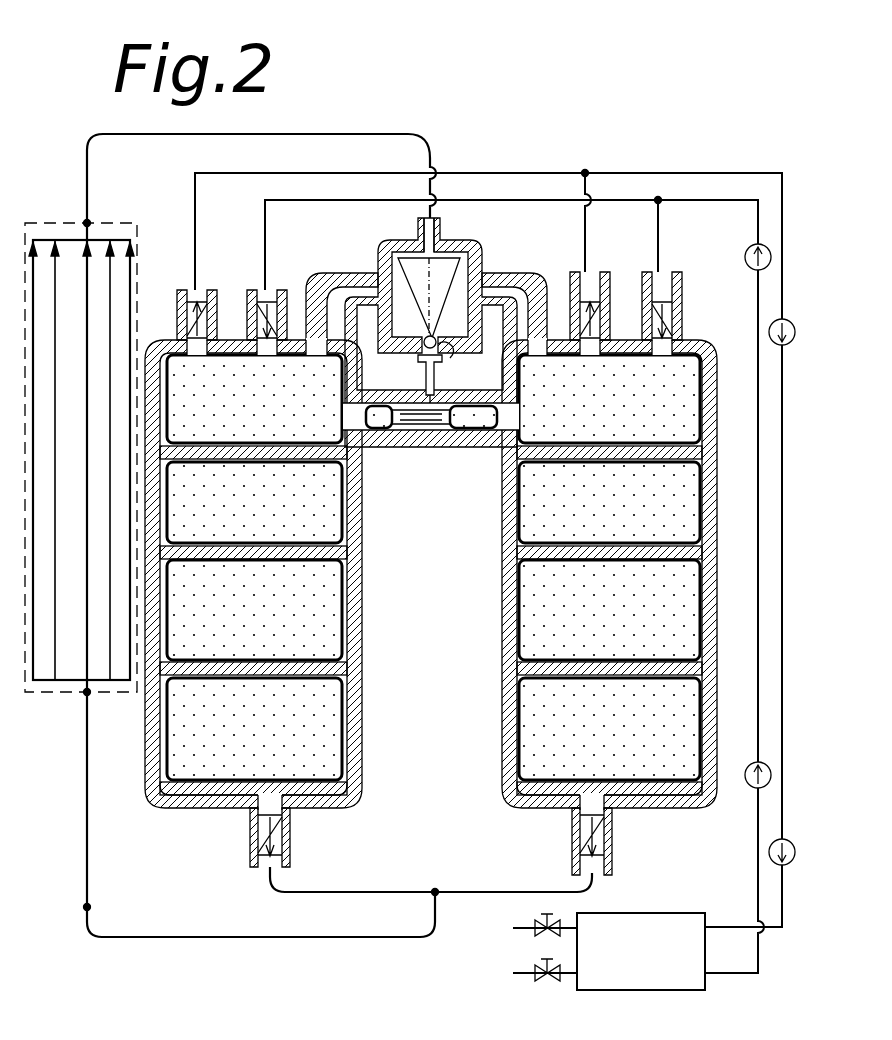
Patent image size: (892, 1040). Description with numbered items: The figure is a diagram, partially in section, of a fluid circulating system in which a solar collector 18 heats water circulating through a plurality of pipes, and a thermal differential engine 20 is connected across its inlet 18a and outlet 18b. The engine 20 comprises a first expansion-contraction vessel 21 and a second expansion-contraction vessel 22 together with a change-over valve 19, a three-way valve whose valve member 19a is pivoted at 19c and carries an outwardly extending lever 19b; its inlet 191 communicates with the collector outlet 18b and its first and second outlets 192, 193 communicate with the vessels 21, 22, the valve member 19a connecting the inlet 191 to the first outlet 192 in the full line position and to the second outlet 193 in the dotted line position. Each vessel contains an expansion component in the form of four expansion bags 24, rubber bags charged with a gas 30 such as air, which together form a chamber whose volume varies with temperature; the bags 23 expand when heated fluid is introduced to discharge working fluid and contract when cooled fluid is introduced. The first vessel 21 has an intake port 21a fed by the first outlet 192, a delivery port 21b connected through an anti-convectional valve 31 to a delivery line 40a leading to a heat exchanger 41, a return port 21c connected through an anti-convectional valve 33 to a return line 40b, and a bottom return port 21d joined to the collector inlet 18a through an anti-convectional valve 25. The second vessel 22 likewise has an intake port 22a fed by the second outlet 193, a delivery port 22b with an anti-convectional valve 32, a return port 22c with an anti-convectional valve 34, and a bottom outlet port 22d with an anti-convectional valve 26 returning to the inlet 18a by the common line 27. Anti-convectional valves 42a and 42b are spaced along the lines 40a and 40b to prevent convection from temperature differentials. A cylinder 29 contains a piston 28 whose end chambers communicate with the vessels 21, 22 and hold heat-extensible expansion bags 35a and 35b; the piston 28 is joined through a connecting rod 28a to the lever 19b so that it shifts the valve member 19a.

The solar collector 18 is at (88, 224).
The solar collector inlet 18a is at (86, 700).
The solar collector outlet 18b is at (86, 222).
The change-over valve 19 is at (486, 252).
The valve member 19a is at (386, 300).
The lever 19b is at (414, 360).
The pivot 19c is at (440, 352).
The inlet 191 is at (440, 230).
The first outlet 192 is at (356, 292).
The second outlet 193 is at (494, 290).
The thermal differential engine 20 is at (178, 256).
The first expansion-contraction vessel 21 is at (370, 572).
The intake port 21a is at (328, 360).
The delivery port 21b is at (192, 348).
The return port 21c is at (270, 348).
The return port 21d is at (270, 800).
The second expansion-contraction vessel 22 is at (494, 570).
The intake port 22a is at (533, 348).
The delivery port 22b is at (596, 348).
The return port 22c is at (660, 348).
The outlet port 22d is at (594, 800).
The adsorbent beds 23 is at (342, 692).
The expansion bags 24 is at (350, 716).
The anti-convectional valve 25 is at (258, 836).
The anti-convectional valve 26 is at (576, 836).
The return line 27 is at (232, 937).
The piston 28 is at (408, 462).
The connecting rod 28a is at (418, 433).
The cylinder 29 is at (609, 502).
The gas 30 is at (336, 752).
The anti-convectional valve 31 is at (197, 290).
The anti-convectional valve 32 is at (570, 290).
The anti-convectional valve 33 is at (268, 290).
The anti-convectional valve 34 is at (680, 300).
The expansion bag 35a is at (380, 432).
The expansion bag 35b is at (484, 432).
The delivery line 40a is at (716, 162).
The return line 40b is at (606, 200).
The heat exchanger 41 is at (666, 913).
The anti-convectional valves 42a is at (790, 345).
The anti-convectional valves 42b is at (748, 255).